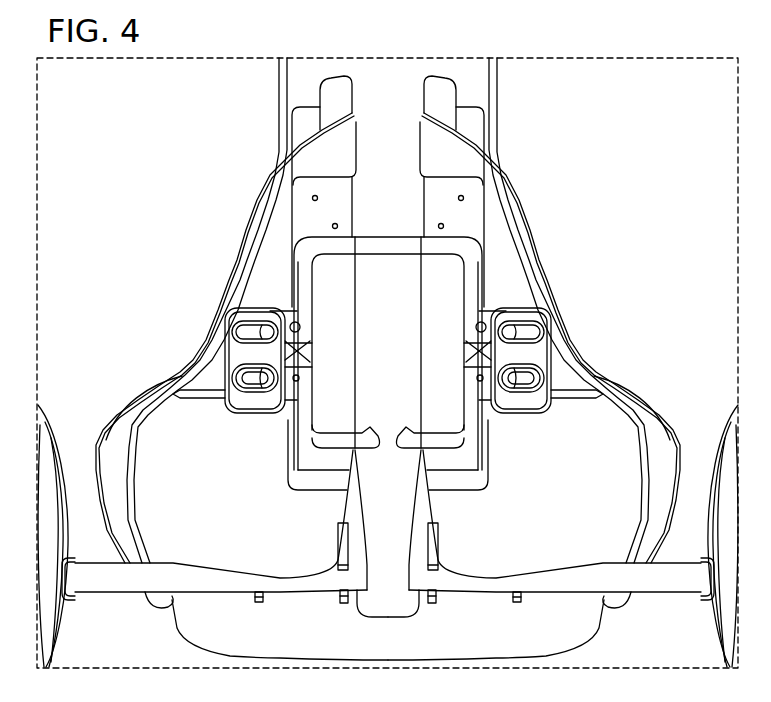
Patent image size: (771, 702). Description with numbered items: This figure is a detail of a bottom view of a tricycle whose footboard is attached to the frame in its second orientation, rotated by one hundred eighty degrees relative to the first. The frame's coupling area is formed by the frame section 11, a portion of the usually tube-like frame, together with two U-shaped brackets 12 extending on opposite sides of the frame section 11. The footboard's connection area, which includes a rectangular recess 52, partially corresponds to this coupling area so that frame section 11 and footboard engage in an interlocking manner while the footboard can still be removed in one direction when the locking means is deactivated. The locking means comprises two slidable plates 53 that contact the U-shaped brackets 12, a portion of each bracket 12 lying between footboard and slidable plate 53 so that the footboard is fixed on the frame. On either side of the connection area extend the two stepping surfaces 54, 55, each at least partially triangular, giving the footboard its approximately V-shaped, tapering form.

The frame section 11 is at (393, 373).
The U-shaped bracket 12 is at (463, 253).
The rectangular recess 52 is at (300, 225).
The slidable plate 53 is at (245, 360).
The stepping surface 54 is at (163, 440).
The stepping surface 55 is at (583, 433).